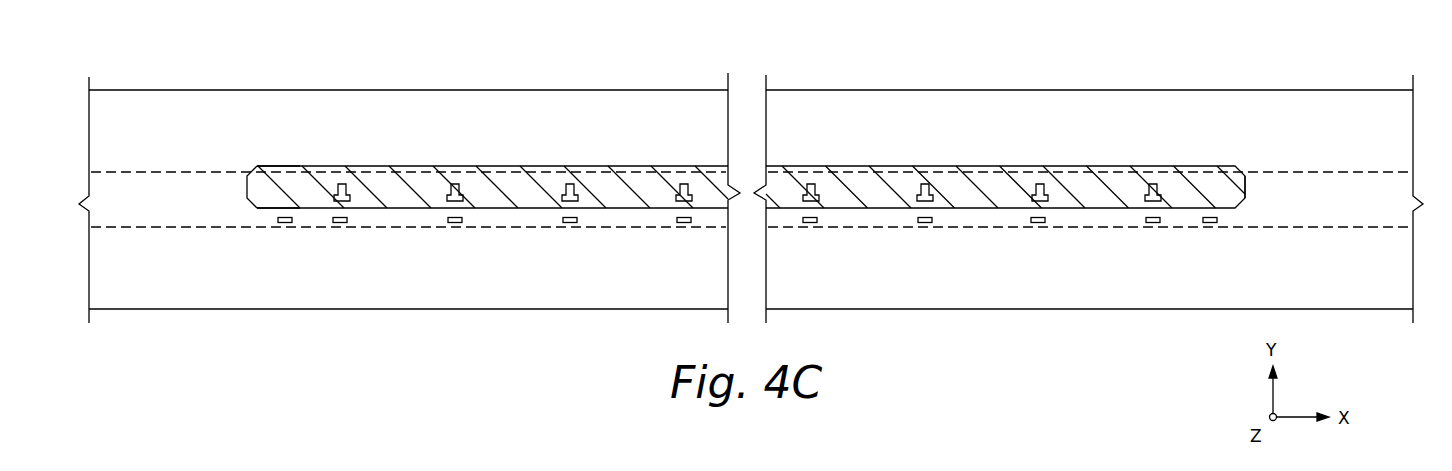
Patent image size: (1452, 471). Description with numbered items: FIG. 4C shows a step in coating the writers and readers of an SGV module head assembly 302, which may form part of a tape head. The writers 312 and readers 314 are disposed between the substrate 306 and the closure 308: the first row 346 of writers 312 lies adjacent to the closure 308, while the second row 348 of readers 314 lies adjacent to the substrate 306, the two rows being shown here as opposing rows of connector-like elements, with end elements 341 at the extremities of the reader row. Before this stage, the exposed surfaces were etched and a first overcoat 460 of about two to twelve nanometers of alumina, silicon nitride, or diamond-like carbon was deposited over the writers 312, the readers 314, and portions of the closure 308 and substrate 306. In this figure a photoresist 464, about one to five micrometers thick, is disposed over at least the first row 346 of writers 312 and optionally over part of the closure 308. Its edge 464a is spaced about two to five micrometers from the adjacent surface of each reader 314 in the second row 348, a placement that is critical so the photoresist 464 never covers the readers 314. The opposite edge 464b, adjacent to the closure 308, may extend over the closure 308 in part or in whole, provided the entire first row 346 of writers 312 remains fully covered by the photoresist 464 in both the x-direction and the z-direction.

The SGV module head assembly 302 is at (225, 74).
The substrate 306 is at (1060, 298).
The closure 308 is at (1043, 125).
The writers 312 is at (339, 184).
The readers 314 is at (331, 220).
The end contact pads 341 is at (277, 220).
The first row 346 is at (292, 190).
The second row 348 is at (1264, 216).
The first overcoat 460 is at (1313, 203).
The photoresist 464 is at (1005, 203).
The edge of the photoresist 464a is at (705, 210).
The edge of the photoresist 464b is at (705, 165).